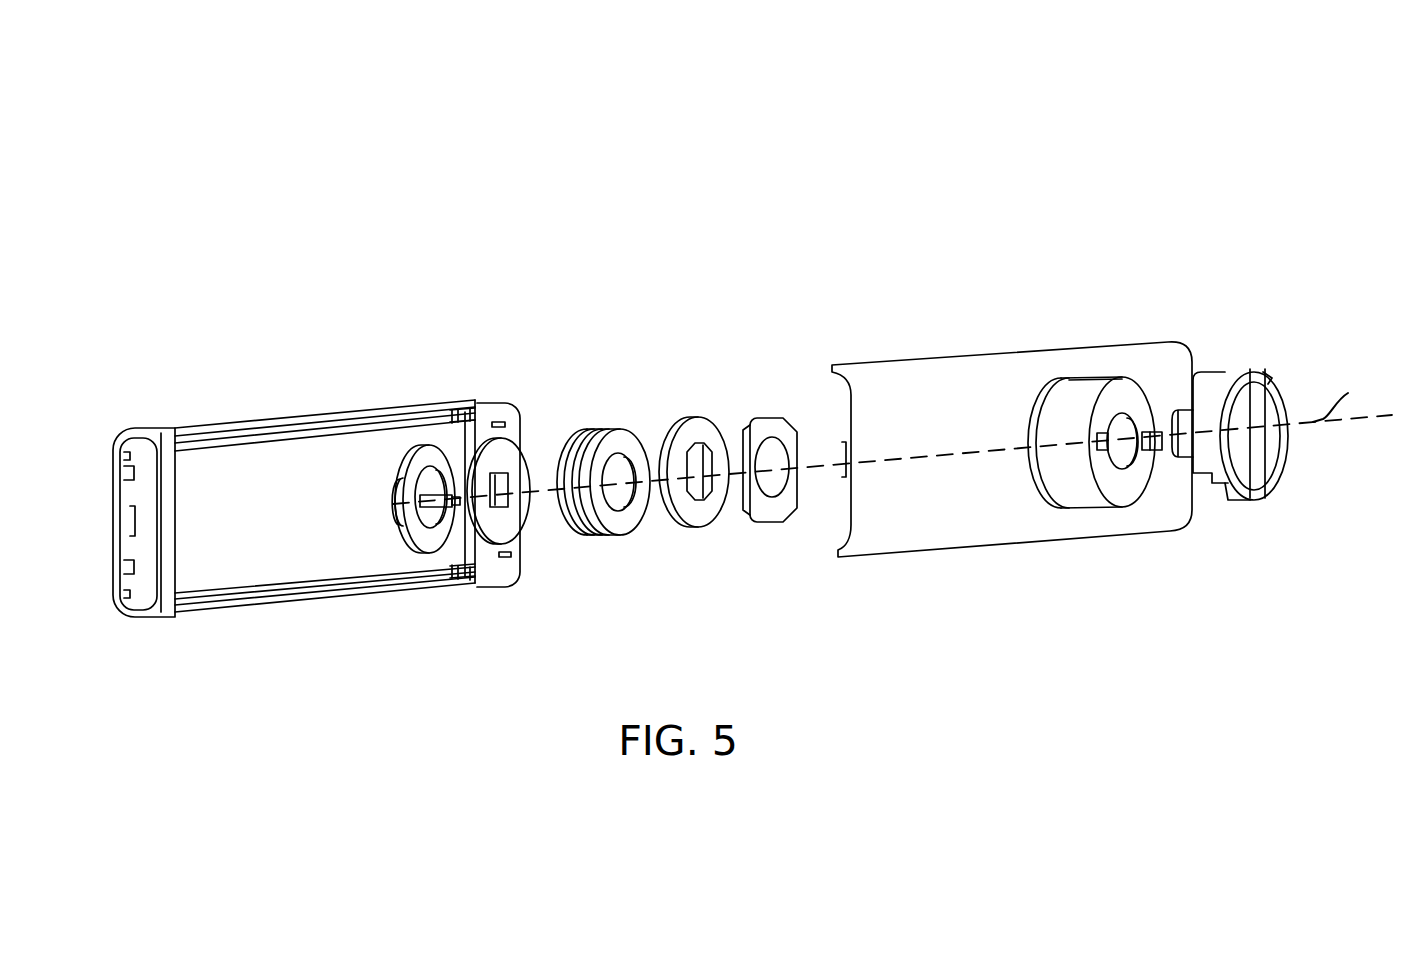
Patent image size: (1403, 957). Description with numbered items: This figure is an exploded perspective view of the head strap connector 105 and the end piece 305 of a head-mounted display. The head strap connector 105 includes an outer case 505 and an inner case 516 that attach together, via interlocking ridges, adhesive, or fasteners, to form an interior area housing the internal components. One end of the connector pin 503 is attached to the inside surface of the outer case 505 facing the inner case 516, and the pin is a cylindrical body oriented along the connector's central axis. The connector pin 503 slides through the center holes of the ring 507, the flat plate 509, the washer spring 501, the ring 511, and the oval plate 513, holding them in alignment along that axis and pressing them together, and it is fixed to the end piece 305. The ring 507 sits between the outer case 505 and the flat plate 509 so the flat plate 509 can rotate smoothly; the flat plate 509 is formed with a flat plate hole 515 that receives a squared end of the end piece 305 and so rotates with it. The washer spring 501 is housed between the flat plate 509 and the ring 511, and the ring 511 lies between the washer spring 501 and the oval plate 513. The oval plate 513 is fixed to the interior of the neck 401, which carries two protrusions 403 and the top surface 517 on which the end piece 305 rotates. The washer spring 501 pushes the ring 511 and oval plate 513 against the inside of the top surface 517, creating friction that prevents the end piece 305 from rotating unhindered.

The head strap connector 105 is at (1076, 179).
The outer case 505 is at (233, 421).
The connector pin 503 is at (430, 495).
The ring 507 is at (428, 538).
The flat plate 509 is at (508, 527).
The flat plate hole 515 is at (505, 445).
The washer spring 501 is at (603, 432).
The ring 511 is at (700, 515).
The oval plate 513 is at (773, 422).
The inner case 516 is at (933, 397).
The neck 401 is at (1078, 402).
The top surface 517 is at (1127, 395).
The protrusion 403 is at (1100, 452).
The end piece 305 is at (1250, 497).